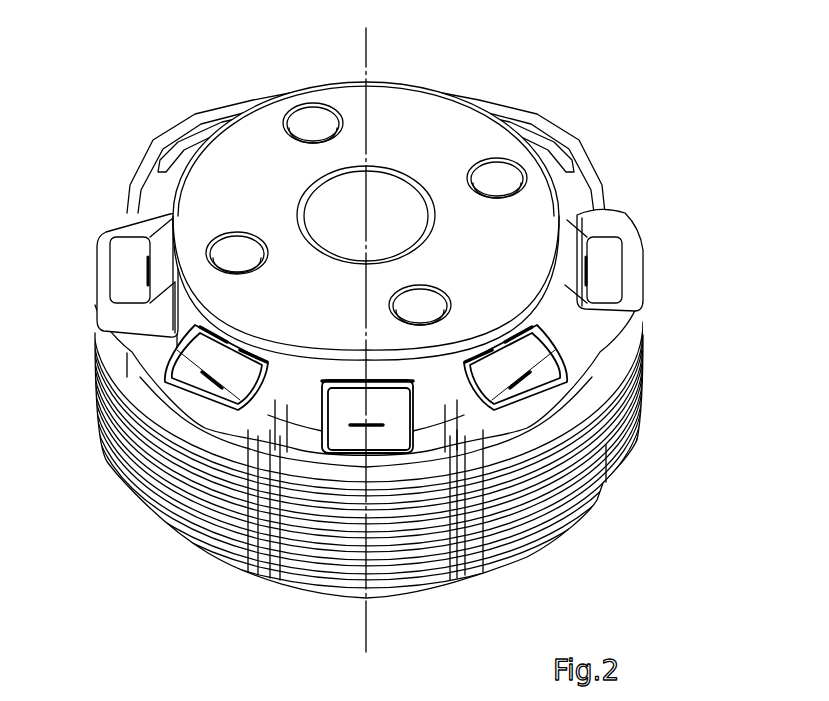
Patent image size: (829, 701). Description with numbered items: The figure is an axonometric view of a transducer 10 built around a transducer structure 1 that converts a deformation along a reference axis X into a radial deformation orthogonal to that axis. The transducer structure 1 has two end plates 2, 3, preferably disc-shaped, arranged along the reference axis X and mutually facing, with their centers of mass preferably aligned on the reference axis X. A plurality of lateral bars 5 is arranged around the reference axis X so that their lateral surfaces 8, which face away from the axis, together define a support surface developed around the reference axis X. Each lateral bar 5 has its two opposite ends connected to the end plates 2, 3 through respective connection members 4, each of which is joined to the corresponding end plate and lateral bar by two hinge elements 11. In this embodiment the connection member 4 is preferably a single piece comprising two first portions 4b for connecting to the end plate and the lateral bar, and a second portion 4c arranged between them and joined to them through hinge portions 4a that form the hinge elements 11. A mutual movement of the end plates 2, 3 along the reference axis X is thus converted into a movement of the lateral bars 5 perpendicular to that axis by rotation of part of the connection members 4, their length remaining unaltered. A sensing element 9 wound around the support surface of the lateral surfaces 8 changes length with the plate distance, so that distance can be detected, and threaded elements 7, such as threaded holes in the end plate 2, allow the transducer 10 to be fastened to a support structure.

The transducer structure 1 is at (365, 356).
The end plate 2 is at (452, 125).
The end plate 3 is at (466, 578).
The connection member 4 is at (512, 362).
The hinge portion 4a is at (167, 216).
The first portion 4b is at (125, 282).
The second portion 4c is at (157, 257).
The lateral bar 5 is at (595, 501).
The threaded element 7 is at (500, 172).
The lateral surface 8 is at (212, 555).
The sensing element 9 is at (172, 530).
The transducer 10 is at (397, 587).
The hinge element 11 is at (590, 237).
The reference axis X is at (367, 42).